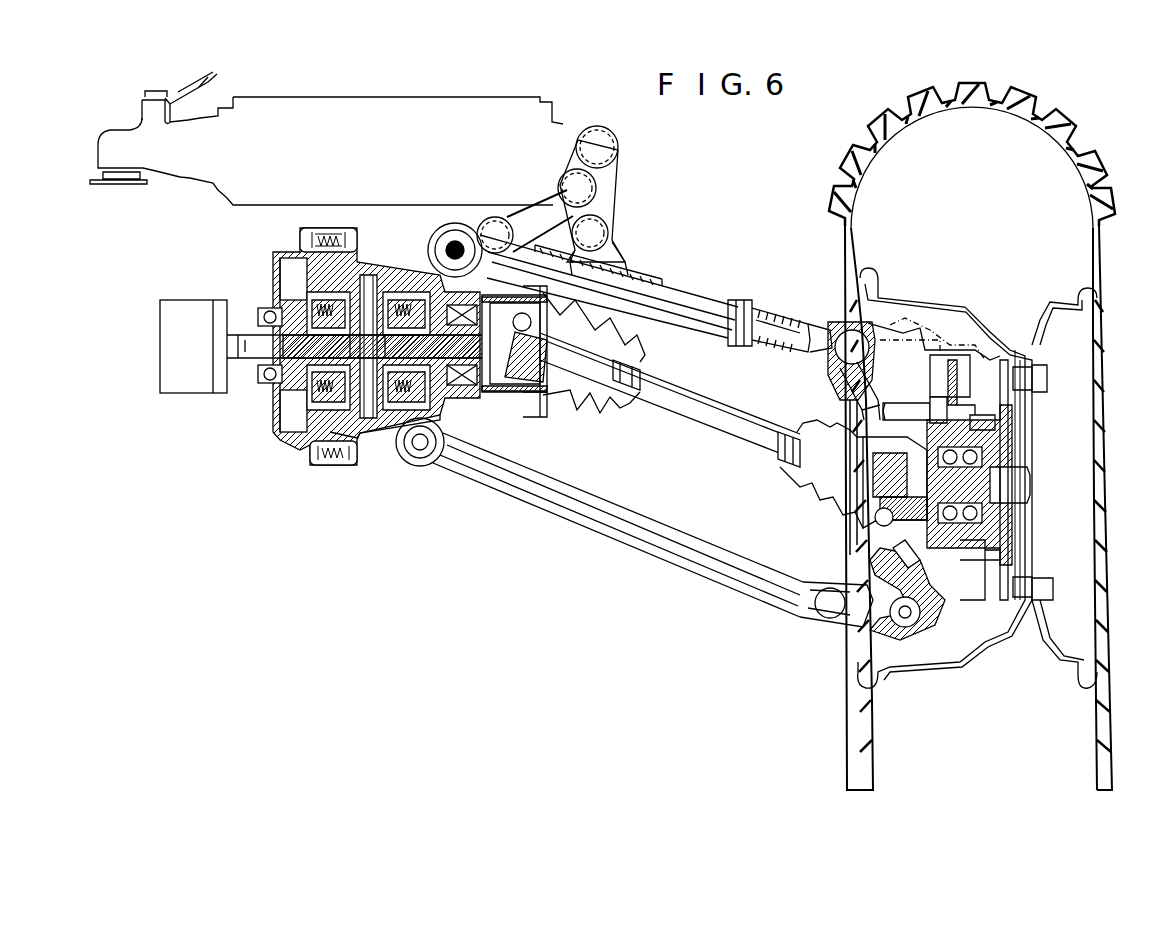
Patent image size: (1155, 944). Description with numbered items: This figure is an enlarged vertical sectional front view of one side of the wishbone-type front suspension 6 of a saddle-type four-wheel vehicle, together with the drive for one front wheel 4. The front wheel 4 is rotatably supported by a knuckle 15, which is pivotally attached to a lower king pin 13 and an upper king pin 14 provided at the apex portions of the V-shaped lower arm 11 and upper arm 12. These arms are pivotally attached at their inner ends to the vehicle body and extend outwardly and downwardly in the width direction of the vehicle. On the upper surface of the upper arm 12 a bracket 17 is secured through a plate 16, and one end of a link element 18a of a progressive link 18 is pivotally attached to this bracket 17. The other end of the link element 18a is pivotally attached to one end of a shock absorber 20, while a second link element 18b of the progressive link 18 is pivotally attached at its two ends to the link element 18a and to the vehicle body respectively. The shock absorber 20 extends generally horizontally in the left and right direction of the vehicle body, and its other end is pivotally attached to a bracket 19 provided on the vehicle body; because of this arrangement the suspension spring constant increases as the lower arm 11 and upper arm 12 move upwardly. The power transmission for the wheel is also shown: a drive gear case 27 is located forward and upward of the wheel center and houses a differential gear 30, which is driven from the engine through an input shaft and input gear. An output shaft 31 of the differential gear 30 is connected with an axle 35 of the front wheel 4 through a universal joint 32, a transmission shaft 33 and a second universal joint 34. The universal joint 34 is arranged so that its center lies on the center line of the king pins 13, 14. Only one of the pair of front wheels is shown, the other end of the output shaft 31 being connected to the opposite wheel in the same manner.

The front wheel 4 is at (1092, 250).
The front suspension 6 is at (787, 253).
The lower arm 11 is at (625, 528).
The upper arm 12 is at (700, 293).
The king pin 13 is at (888, 575).
The king pin 14 is at (845, 378).
The knuckle 15 is at (1025, 555).
The plate 16 is at (650, 274).
The bracket 17 is at (614, 240).
The progressive link 18 is at (633, 197).
The link element 18a is at (616, 165).
The link element 18b is at (545, 215).
The bracket 19 is at (118, 184).
The shock absorber 20 is at (355, 115).
The drive gear case 27 is at (284, 447).
The differential gear 30 is at (360, 433).
The output shaft 31 is at (263, 350).
The universal joint 32 is at (530, 395).
The transmission shaft 33 is at (700, 412).
The universal joint 34 is at (850, 497).
The axle 35 is at (1032, 487).